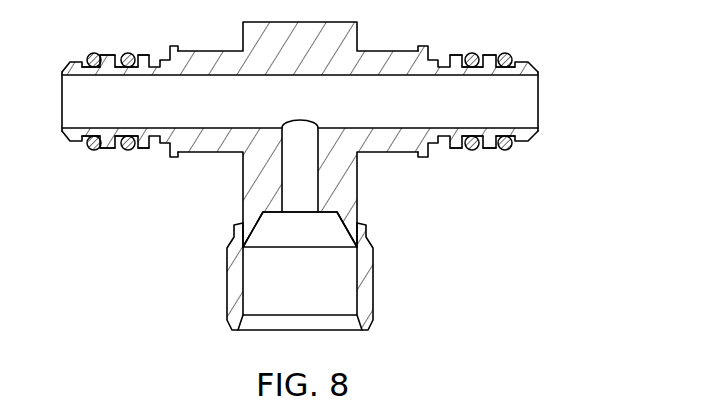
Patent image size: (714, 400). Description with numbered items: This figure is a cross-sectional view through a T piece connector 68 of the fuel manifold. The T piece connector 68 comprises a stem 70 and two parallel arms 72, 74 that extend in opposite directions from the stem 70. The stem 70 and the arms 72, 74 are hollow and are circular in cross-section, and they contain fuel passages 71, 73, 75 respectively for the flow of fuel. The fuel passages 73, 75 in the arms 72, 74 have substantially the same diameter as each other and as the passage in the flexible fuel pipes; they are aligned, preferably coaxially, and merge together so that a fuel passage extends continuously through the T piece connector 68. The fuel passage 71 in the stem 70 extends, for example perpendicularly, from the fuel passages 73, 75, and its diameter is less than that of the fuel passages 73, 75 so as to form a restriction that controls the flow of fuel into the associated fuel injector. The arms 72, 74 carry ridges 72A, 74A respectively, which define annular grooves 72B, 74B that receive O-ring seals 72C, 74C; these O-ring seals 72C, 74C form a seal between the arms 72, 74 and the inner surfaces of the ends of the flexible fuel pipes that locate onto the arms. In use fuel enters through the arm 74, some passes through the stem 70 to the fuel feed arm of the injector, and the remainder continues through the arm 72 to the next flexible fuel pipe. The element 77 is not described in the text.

The T piece connector 68 is at (514, 245).
The stem 70 is at (371, 268).
The fuel passage 71 is at (297, 175).
The arm 72 is at (517, 61).
The ridge 72A is at (491, 52).
The annular groove 72B is at (472, 128).
The O-ring seal 72C is at (504, 152).
The fuel passage 73 is at (539, 124).
The arm 74 is at (78, 144).
The ridge 74A is at (145, 54).
The annular groove 74B is at (128, 133).
The O-ring seal 74C is at (91, 54).
The fuel passage 75 is at (140, 120).
The ferrule 77 is at (287, 276).